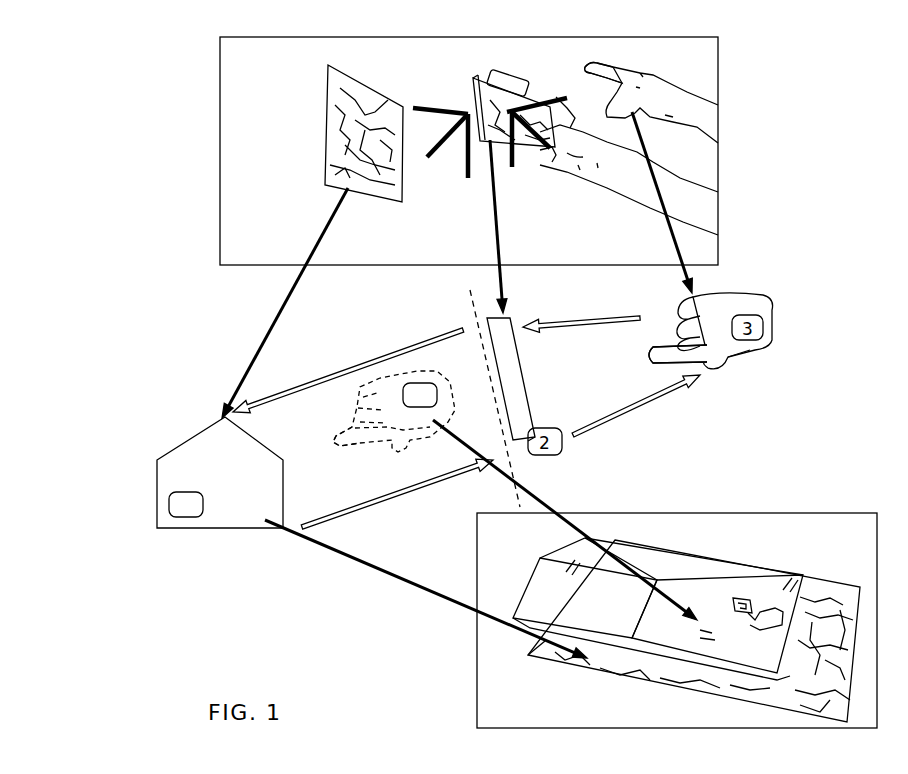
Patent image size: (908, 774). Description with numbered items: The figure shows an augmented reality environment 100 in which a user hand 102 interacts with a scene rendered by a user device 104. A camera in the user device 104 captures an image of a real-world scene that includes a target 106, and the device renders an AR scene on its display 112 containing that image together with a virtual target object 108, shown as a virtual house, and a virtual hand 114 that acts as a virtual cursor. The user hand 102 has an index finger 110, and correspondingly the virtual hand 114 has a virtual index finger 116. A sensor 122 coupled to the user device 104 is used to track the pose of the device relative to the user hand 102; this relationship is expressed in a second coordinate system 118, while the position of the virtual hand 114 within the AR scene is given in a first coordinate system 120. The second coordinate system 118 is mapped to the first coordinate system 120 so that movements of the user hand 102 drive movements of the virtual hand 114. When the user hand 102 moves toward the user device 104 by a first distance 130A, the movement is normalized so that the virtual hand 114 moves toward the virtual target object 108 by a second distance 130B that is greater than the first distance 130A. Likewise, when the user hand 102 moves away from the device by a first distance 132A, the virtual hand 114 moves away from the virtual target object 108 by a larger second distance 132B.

The augmented reality environment 100 is at (377, 151).
The user hand 102 is at (660, 80).
The user device 104 is at (540, 93).
The target 106 is at (348, 72).
The virtual target object 108 is at (202, 532).
The index finger 110 is at (602, 70).
The display 112 is at (473, 80).
The virtual hand 114 is at (428, 368).
The virtual index finger 116 is at (352, 450).
The second coordinate system 118 is at (547, 150).
The first coordinate system 120 is at (455, 167).
The sensor 122 is at (503, 67).
The first distance 130A is at (570, 320).
The second distance 130B is at (327, 372).
The first distance 132A is at (635, 412).
The second distance 132B is at (365, 510).